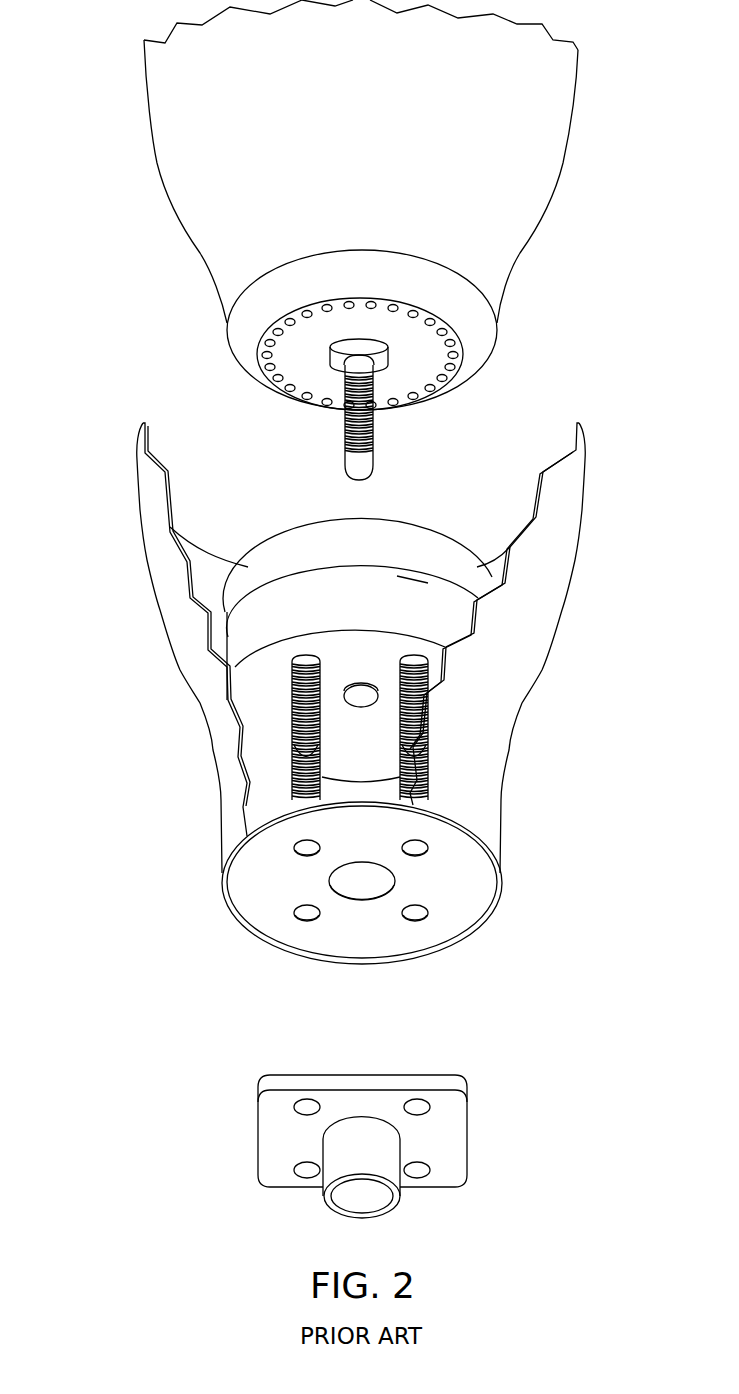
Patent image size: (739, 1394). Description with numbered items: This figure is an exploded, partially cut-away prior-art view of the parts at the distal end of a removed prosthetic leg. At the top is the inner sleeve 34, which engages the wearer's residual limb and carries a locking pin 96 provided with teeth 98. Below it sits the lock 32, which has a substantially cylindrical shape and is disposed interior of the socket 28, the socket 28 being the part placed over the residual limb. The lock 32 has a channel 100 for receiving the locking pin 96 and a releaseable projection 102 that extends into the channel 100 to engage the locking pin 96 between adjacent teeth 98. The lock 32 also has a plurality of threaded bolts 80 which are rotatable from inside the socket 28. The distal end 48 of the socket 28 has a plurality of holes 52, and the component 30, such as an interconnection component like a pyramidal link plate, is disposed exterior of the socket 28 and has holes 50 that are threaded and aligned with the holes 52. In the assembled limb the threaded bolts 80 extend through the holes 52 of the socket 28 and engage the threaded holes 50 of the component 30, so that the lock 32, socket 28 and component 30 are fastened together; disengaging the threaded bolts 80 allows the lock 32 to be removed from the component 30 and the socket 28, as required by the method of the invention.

The inner sleeve 34 is at (170, 165).
The locking pin 96 is at (396, 438).
The teeth 98 is at (350, 440).
The socket 28 is at (157, 567).
The lock 32 is at (272, 518).
The threaded bolts 80 is at (292, 787).
The releaseable projection 102 is at (360, 686).
The channel 100 is at (363, 707).
The distal end 48 is at (222, 887).
The holes 52 is at (305, 907).
The component 30 is at (455, 1142).
The holes 50 is at (308, 1100).